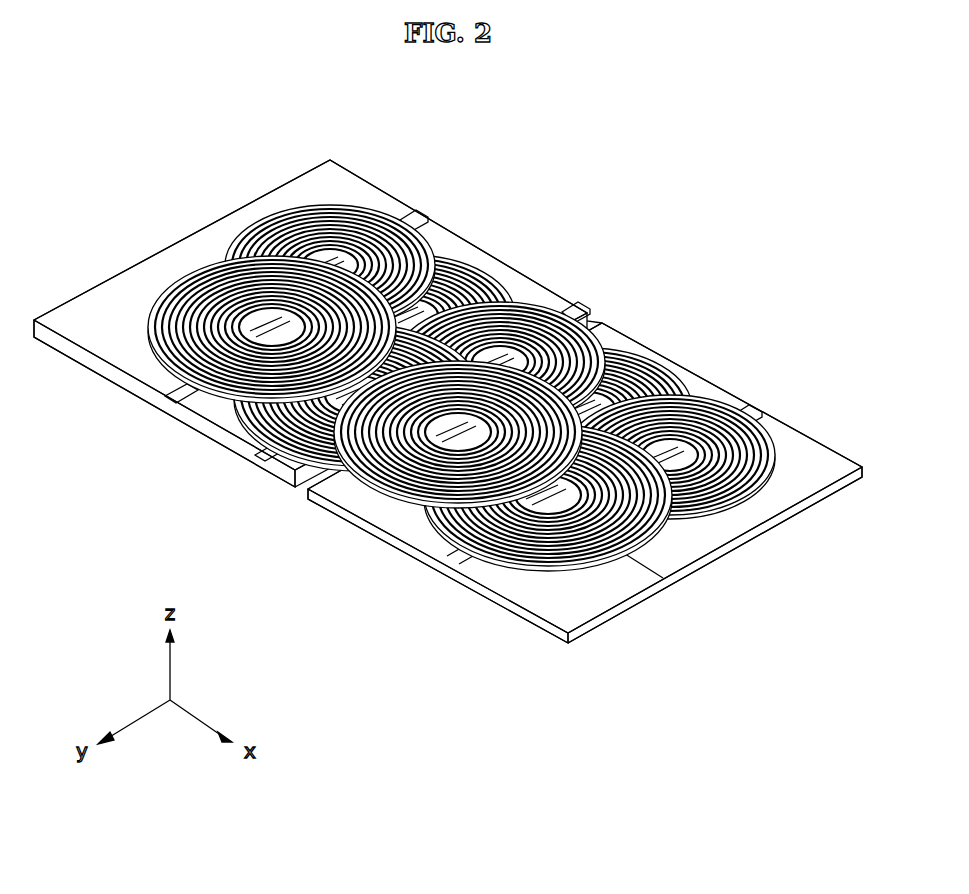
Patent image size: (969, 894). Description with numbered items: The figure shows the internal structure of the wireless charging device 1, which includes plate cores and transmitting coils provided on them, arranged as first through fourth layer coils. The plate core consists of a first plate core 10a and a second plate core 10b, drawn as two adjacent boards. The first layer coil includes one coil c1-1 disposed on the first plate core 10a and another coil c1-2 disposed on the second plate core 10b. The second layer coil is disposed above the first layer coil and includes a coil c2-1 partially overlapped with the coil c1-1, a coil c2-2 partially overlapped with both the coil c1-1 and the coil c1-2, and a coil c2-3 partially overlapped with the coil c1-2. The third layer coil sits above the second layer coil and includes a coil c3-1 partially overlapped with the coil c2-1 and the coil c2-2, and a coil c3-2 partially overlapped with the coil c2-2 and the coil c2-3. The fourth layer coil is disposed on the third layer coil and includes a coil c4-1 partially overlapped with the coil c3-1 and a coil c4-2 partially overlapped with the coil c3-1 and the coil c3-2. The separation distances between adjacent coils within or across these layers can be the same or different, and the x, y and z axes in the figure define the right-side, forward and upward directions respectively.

The wireless charging device 1 is at (85, 110).
The first plate core 10a is at (222, 218).
The second plate core 10b is at (713, 563).
The 1-1 coil c1-1 is at (485, 272).
The 1-2 coil c1-2 is at (655, 366).
The 2-1 coil c2-1 is at (398, 220).
The 2-2 coil c2-2 is at (562, 312).
The 2-3 coil c2-3 is at (733, 408).
The 3-1 coil c3-1 is at (270, 450).
The 3-2 coil c3-2 is at (470, 548).
The 4-1 coil c4-1 is at (173, 400).
The 4-2 coil c4-2 is at (378, 495).